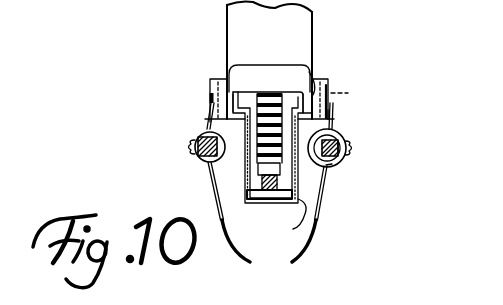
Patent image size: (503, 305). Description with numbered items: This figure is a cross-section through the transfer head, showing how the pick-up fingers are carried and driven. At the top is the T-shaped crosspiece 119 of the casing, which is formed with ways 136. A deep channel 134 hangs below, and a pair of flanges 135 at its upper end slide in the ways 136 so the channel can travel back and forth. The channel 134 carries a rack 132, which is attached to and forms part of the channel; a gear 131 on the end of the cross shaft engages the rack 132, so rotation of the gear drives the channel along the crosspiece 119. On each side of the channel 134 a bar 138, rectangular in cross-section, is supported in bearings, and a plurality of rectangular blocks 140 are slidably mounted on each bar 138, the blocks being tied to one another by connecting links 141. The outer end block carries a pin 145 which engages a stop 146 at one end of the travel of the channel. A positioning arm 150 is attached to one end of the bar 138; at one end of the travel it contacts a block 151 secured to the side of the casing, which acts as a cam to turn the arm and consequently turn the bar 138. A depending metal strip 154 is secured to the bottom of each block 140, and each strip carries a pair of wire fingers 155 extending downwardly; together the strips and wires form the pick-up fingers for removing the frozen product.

The crosspiece 119 is at (290, 34).
The gear 131 is at (257, 104).
The rack 132 is at (273, 172).
The deep channel 134 is at (279, 222).
The flanges 135 is at (233, 92).
The ways 136 is at (205, 119).
The bar 138 is at (350, 160).
The rectangular blocks 140 is at (197, 157).
The connecting links 141 is at (349, 146).
The pin 145 is at (336, 163).
The stop 146 is at (222, 83).
The positioning arm 150 is at (330, 116).
The block 151 is at (356, 95).
The metal strip 154 is at (219, 198).
The wire fingers 155 is at (236, 257).